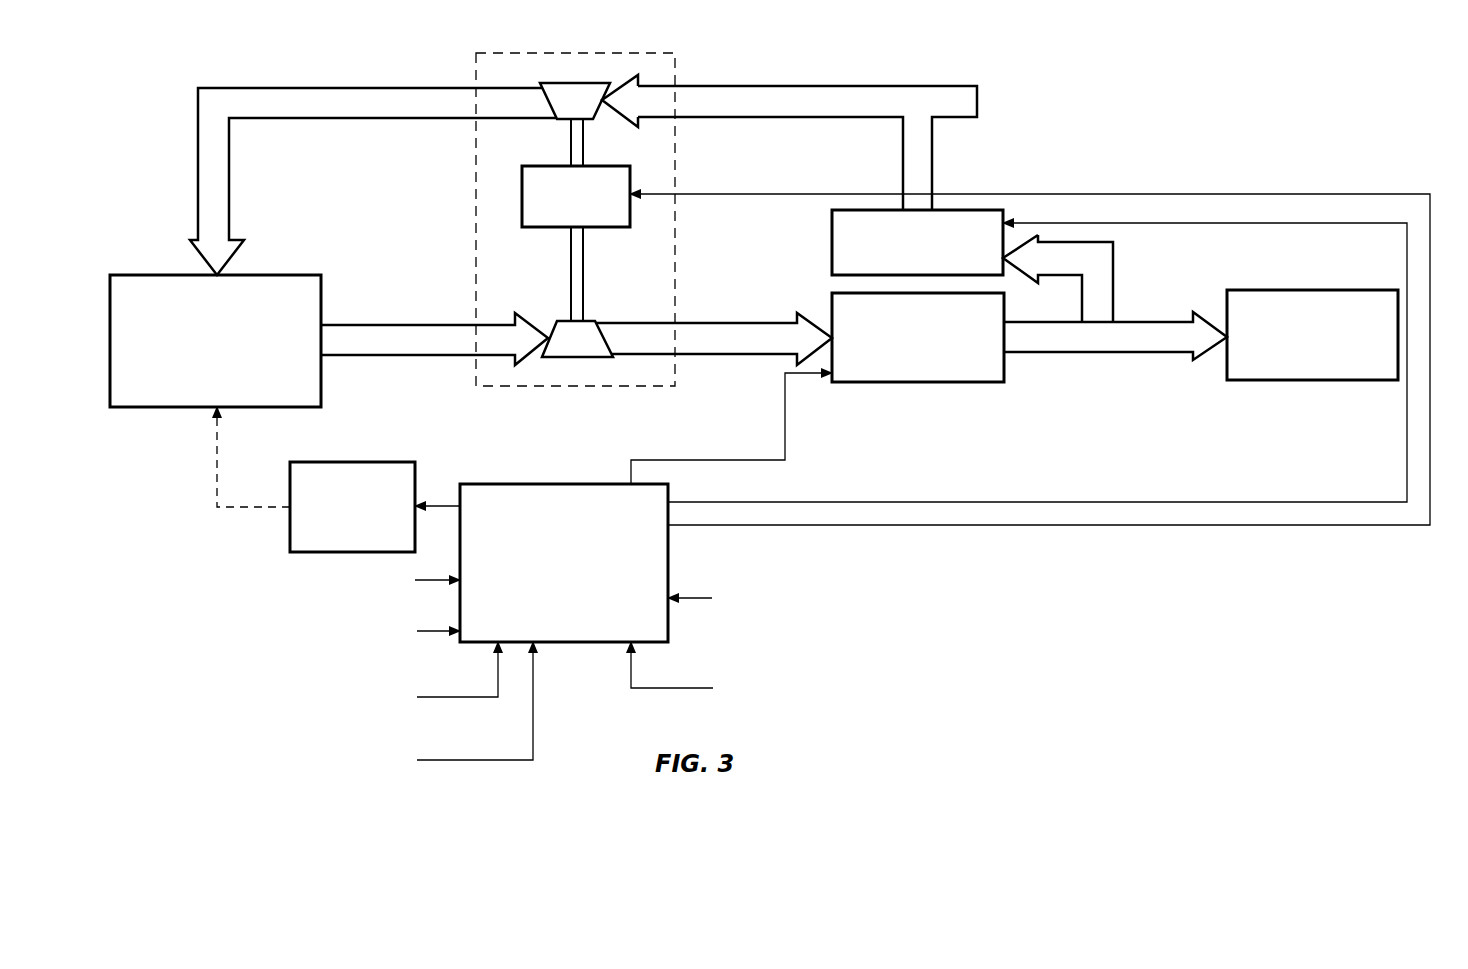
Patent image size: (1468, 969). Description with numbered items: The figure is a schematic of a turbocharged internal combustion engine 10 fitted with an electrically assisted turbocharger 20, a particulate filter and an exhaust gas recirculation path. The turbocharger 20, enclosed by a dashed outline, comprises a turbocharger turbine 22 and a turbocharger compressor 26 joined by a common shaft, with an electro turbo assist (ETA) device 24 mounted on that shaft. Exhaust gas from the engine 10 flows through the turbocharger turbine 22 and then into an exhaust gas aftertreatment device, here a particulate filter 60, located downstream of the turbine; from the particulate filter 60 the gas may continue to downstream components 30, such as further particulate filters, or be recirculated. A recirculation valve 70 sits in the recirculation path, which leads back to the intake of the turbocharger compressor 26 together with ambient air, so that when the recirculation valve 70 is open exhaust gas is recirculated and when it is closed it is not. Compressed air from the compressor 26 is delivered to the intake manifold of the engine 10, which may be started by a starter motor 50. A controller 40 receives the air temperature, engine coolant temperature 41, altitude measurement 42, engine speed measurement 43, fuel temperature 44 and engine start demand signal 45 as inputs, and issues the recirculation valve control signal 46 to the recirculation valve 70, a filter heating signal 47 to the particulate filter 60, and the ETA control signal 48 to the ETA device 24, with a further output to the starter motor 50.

The internal combustion engine 10 is at (215, 341).
The turbocharger 20 is at (693, 55).
The turbocharger turbine 22 is at (575, 358).
The electro turbo assist (ETA) device 24 is at (576, 196).
The turbocharger compressor 26 is at (557, 121).
The downstream components 30 is at (1312, 335).
The controller 40 is at (526, 563).
The engine coolant temperature 41 is at (693, 665).
The altitude measurement 42 is at (421, 634).
The engine speed measurement 43 is at (440, 676).
The fuel temperature 44 is at (457, 707).
The engine start demand signal 45 is at (710, 607).
The recirculation valve control signal 46 is at (1154, 493).
The filter heating signal 47 is at (787, 429).
The ETA control signal 48 is at (1170, 535).
The starter motor 50 is at (338, 479).
The exhaust gas aftertreatment device (particulate filter) 60 is at (1029, 308).
The recirculation valve 70 is at (917, 242).